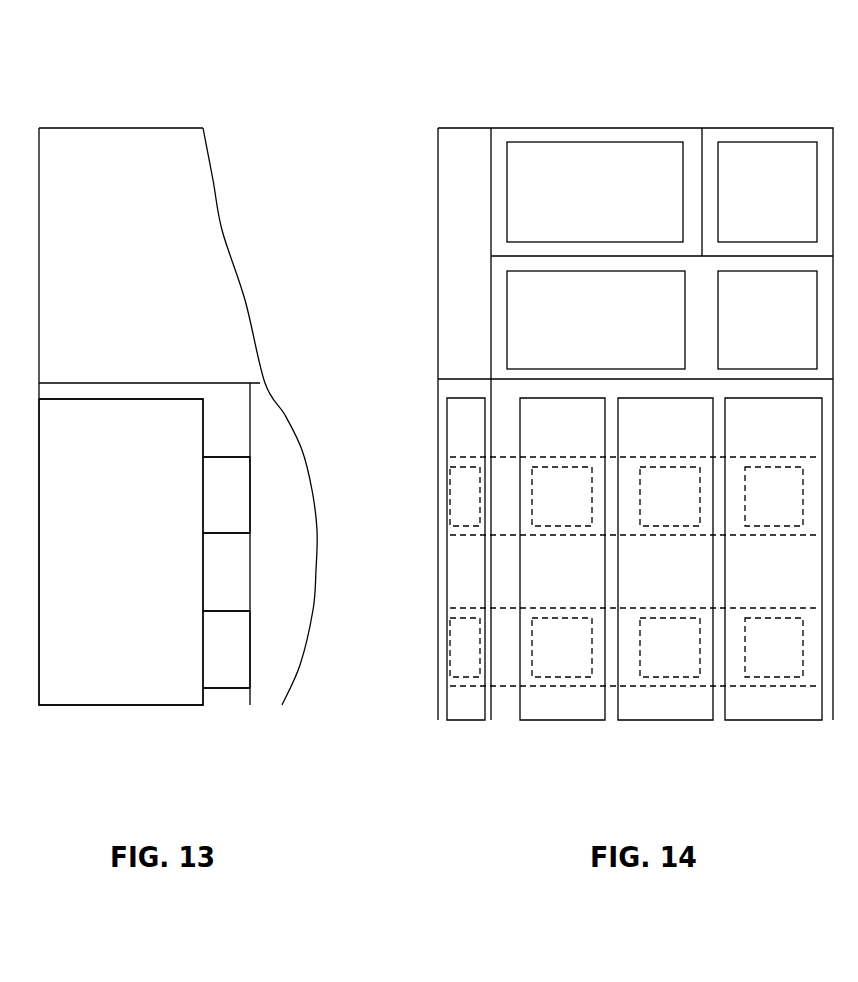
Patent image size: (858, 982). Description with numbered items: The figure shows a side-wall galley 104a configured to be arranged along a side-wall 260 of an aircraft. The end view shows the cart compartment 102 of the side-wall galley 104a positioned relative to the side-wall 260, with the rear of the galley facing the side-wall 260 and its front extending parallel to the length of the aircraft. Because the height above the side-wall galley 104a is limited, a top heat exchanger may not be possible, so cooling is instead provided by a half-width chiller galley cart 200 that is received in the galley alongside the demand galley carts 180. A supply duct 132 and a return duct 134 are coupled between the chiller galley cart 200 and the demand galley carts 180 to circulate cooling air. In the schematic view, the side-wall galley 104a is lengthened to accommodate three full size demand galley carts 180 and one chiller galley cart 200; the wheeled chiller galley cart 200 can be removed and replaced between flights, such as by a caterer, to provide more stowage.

In FIG. 13, the side-wall galley 104a is at (176, 101).
In FIG. 14, the side-wall galley 104a is at (467, 78).
In FIG. 13, the cart compartment 102 is at (232, 429).
In FIG. 13, the side-wall 260 is at (305, 458).
In FIG. 13, the supply duct 132 is at (232, 508).
In FIG. 13, the demand galley cart 180 is at (183, 585).
In FIG. 14, the demand galley cart 180 is at (562, 712).
In FIG. 13, the return duct 134 is at (230, 647).
In FIG. 14, the chiller galley cart 200 is at (469, 710).